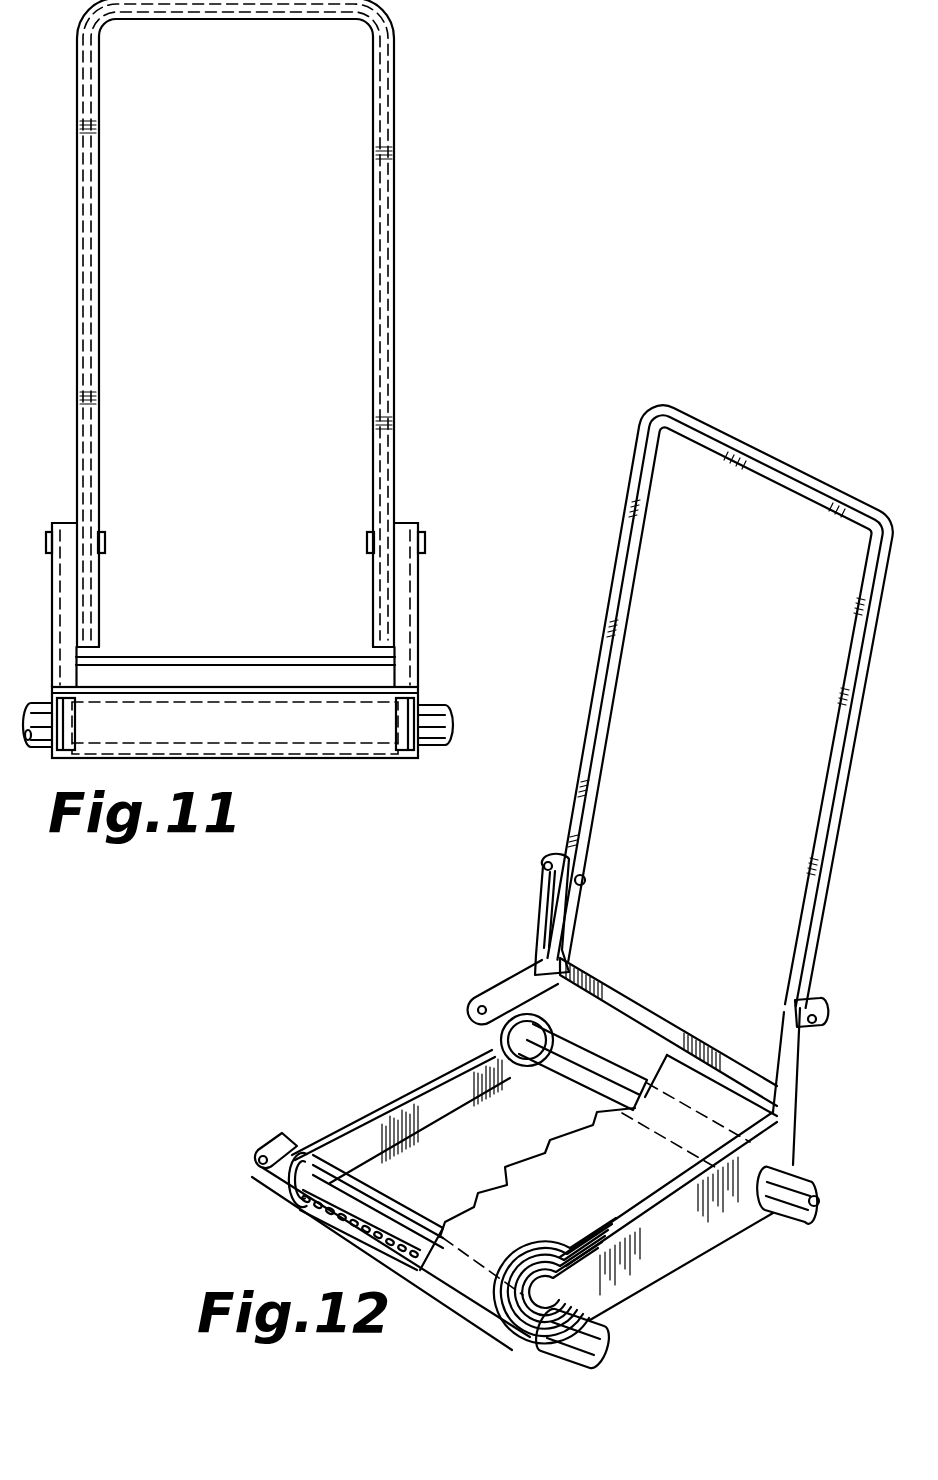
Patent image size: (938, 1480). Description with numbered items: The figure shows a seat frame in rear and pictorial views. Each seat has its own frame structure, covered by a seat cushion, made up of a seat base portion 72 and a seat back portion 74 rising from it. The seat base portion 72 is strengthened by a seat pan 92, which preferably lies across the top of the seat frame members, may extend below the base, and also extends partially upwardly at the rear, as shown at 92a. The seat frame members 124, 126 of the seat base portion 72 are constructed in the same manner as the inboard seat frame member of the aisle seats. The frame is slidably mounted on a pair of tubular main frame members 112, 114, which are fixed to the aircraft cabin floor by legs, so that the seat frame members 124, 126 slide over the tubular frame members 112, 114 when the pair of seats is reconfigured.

In FIG. 11, the seat base portion 72 is at (421, 627).
In FIG. 12, the seat base portion 72 is at (643, 1270).
In FIG. 11, the seat back portion 74 is at (398, 291).
In FIG. 12, the seat back portion 74 is at (618, 578).
In FIG. 12, the seat pan 92 is at (637, 1047).
In FIG. 11, the upwardly extending rear portion of seat pan 92a is at (263, 672).
In FIG. 12, the upwardly extending rear portion of seat pan 92a is at (593, 985).
In FIG. 12, the tubular main frame member 112 is at (522, 992).
In FIG. 12, the tubular main frame member 114 is at (357, 1203).
In FIG. 12, the seat frame member 124 is at (427, 1110).
In FIG. 12, the seat frame member 126 is at (700, 1230).